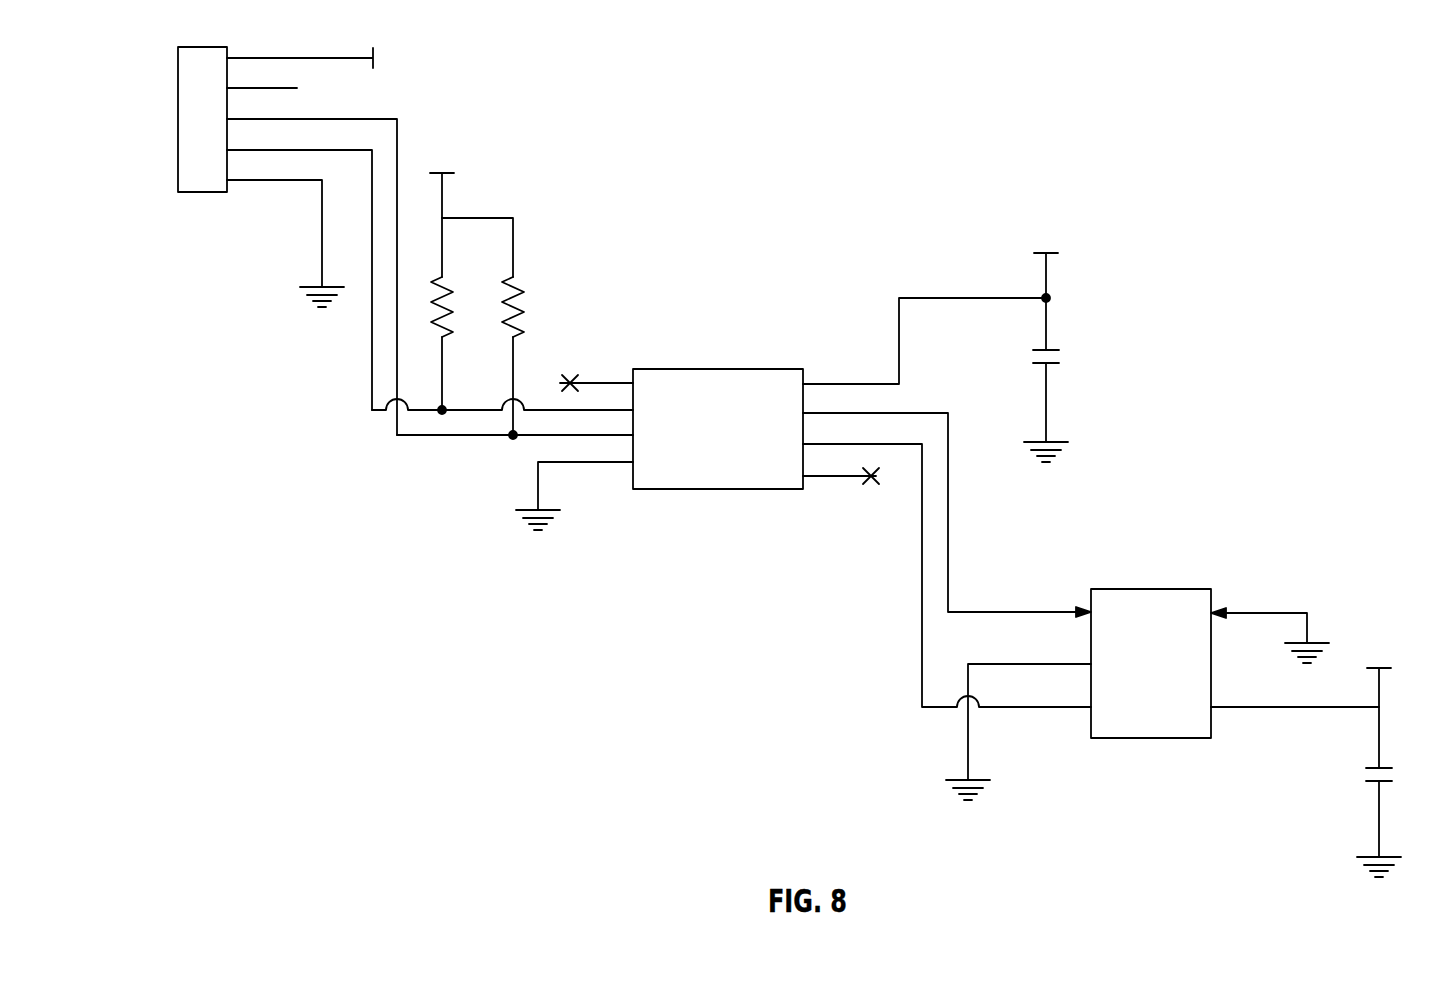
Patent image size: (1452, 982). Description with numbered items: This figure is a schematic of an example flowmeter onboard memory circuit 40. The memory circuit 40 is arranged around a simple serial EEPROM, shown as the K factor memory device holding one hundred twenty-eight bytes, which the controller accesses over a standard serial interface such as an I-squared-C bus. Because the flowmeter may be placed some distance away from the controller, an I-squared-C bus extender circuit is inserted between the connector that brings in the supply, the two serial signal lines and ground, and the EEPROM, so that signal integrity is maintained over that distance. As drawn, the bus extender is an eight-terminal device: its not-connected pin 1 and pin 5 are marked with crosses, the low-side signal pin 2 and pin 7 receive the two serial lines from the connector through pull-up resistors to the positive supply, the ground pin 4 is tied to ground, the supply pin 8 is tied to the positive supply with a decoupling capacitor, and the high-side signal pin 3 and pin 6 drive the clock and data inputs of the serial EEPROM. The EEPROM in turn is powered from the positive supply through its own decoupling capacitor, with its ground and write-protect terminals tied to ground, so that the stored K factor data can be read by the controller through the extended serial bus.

The flowmeter onboard memory circuit 40 is at (1013, 93).
The U2 pin 1 (NC) 1 is at (620, 378).
The U2 pin 2 (Lx) 2 is at (522, 406).
The U2 pin 3 (Sx) 3 is at (923, 502).
The U2 pin 4 (GND) 4 is at (608, 483).
The U2 pin 5 (NC) 5 is at (817, 467).
The U2 pin 6 (Sy) 6 is at (923, 562).
The U2 pin 7 (Ly) 7 is at (535, 433).
The U2 pin 8 (VCC) 8 is at (892, 349).